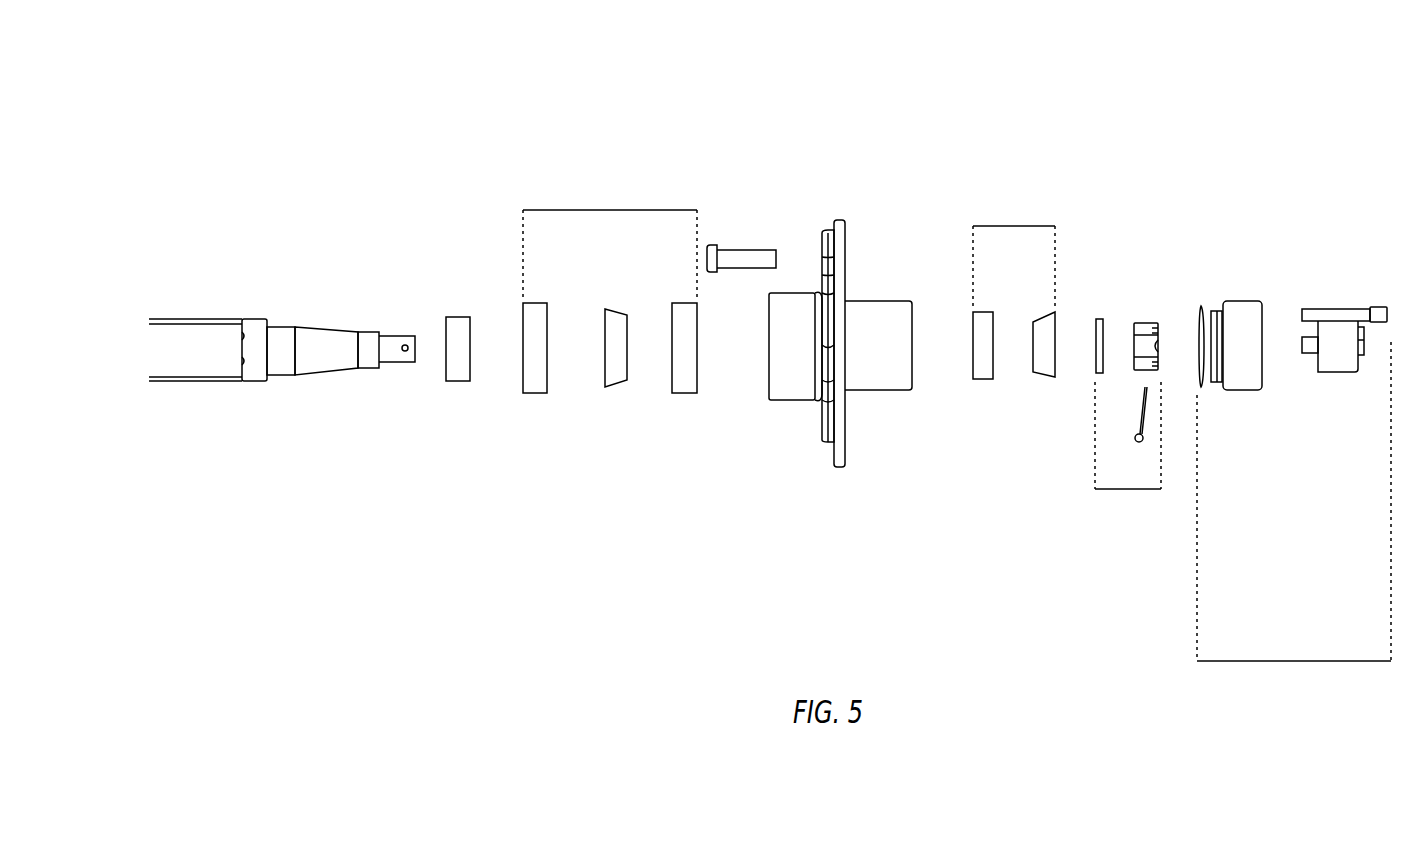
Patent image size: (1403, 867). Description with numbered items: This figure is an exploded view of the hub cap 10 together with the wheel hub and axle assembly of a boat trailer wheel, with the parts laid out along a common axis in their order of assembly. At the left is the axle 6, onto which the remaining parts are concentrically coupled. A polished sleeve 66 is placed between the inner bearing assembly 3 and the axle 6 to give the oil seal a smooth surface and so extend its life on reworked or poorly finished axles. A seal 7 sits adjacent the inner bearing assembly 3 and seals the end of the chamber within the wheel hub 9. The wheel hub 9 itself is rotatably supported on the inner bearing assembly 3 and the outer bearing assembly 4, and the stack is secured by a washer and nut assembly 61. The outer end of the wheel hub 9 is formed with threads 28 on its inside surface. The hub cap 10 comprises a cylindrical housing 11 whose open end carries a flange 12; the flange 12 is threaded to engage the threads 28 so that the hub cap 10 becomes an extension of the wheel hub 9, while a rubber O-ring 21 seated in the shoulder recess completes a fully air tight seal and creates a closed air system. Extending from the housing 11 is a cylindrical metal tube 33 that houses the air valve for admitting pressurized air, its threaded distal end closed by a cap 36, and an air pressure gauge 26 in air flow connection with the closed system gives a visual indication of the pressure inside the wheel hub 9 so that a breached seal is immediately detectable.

The axle 6 is at (192, 328).
The polished sleeve 66 is at (456, 365).
The bearing assembly 3 is at (601, 210).
The seal 7 is at (535, 393).
The wheel hub 9 is at (836, 222).
The threads 28 is at (913, 325).
The bearing assembly 4 is at (1008, 226).
The washer and nut assembly 61 is at (1120, 489).
The O-ring 21 is at (1201, 306).
The flange 12 is at (1215, 311).
The cylindrical housing 11 is at (1236, 301).
The cylindrical metal tube 33 is at (1334, 309).
The cap 36 is at (1378, 307).
The air pressure gauge 26 is at (1333, 353).
The hub cap 10 is at (1285, 661).